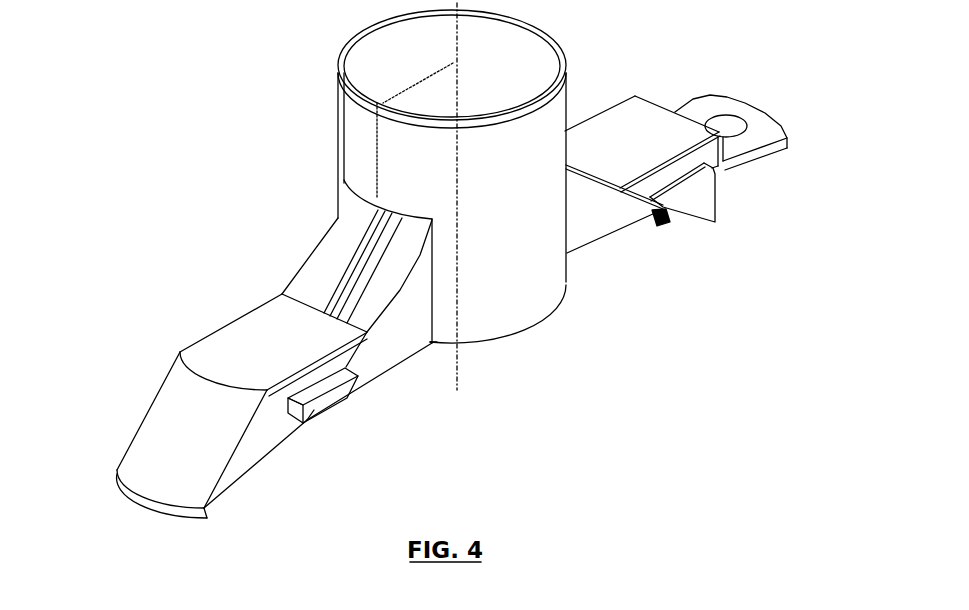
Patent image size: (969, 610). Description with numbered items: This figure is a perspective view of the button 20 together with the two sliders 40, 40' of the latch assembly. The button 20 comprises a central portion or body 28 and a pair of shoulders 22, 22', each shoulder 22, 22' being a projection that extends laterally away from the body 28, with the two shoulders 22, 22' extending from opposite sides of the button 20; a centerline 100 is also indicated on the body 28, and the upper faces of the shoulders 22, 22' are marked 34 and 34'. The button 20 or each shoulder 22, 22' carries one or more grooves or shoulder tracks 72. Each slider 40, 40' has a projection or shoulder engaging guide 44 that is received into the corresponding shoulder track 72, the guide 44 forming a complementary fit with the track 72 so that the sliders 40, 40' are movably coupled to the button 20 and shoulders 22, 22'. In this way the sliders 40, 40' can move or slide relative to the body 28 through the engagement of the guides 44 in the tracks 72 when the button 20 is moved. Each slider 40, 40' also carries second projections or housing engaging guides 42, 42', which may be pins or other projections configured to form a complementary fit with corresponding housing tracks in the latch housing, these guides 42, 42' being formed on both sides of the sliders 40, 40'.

The button 20 is at (400, 176).
The body 28 is at (524, 266).
The central axis 100 is at (468, 385).
The shoulder 22 is at (321, 300).
The arm top surface 34 is at (321, 256).
The shoulder track 72 is at (355, 285).
The slider 40 is at (222, 406).
The housing engaging guide 42 is at (343, 416).
The shoulder 22' is at (642, 142).
The second arm top surface 34' is at (642, 112).
The slider 40' is at (725, 146).
The housing engaging guide 42' is at (725, 193).
The shoulder engaging guide 44 is at (662, 221).